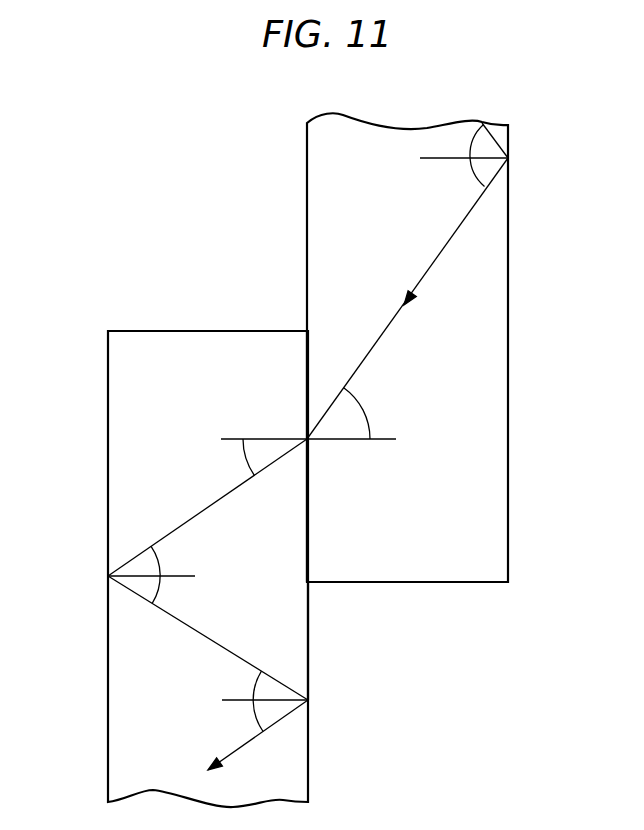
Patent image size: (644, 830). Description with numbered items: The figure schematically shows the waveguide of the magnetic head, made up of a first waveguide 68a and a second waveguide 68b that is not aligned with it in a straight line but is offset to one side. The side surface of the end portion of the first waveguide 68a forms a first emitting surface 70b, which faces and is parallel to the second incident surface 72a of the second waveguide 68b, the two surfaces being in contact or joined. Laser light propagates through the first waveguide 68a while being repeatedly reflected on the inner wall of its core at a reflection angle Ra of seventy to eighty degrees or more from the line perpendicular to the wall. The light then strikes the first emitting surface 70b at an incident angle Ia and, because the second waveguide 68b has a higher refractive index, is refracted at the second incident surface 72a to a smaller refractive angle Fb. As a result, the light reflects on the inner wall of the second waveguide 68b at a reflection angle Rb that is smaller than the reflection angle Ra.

The first waveguide 68a is at (492, 348).
The second waveguide 68b is at (124, 402).
The first emitting surface 70b is at (307, 397).
The second incident surface 72a is at (309, 540).
The reflection angle Ra is at (461, 161).
The incident angle Ia is at (366, 413).
The refractive angle Fb is at (237, 458).
The reflection angle Rb is at (207, 640).